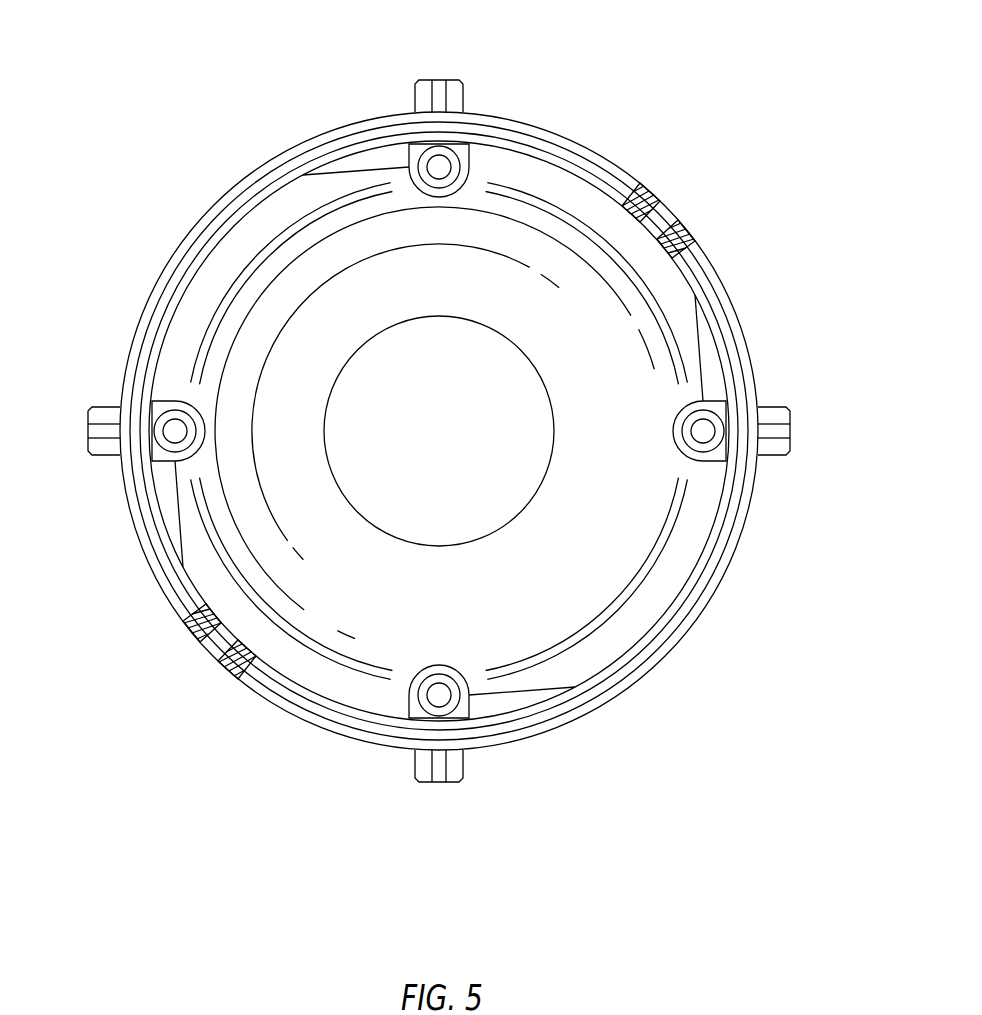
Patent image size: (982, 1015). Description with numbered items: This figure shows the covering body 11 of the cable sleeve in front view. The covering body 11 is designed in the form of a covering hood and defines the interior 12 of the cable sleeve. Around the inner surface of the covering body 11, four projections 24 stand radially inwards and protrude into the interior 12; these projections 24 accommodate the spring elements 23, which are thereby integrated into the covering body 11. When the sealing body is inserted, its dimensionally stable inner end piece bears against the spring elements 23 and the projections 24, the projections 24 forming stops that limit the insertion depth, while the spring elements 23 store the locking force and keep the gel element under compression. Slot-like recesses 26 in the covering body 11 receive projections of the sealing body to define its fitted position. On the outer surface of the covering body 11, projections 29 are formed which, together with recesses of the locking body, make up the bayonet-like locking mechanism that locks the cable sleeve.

The covering body 11 is at (521, 70).
The interior 12 is at (392, 373).
The spring elements 23 is at (178, 431).
The projections 24 is at (438, 200).
The slot-like recesses 26 is at (669, 195).
The projections 29 is at (439, 78).